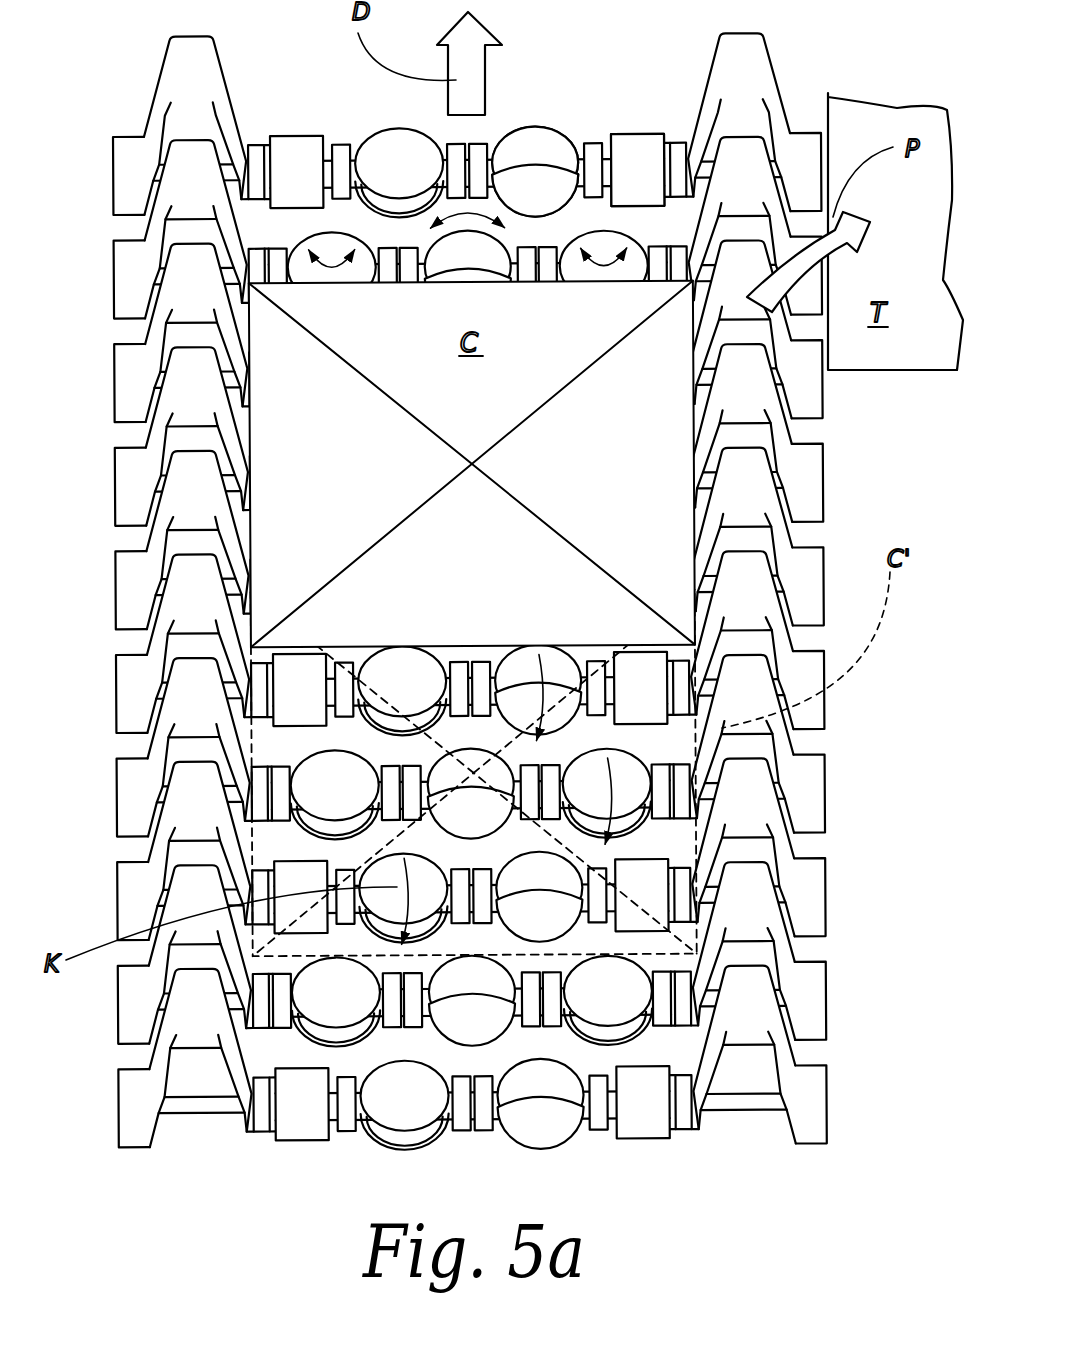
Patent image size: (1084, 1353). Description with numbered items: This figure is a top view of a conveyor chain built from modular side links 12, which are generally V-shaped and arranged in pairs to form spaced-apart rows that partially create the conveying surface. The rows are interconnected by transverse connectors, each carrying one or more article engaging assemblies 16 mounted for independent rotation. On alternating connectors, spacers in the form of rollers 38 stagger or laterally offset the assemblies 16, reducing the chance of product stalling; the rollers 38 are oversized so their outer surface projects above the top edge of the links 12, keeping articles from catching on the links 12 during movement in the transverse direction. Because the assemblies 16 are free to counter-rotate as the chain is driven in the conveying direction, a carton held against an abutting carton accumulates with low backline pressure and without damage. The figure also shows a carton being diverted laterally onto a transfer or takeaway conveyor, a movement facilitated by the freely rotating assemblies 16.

The side link 12 is at (786, 77).
The article engaging assembly 16 is at (532, 110).
The roller 38 is at (632, 158).